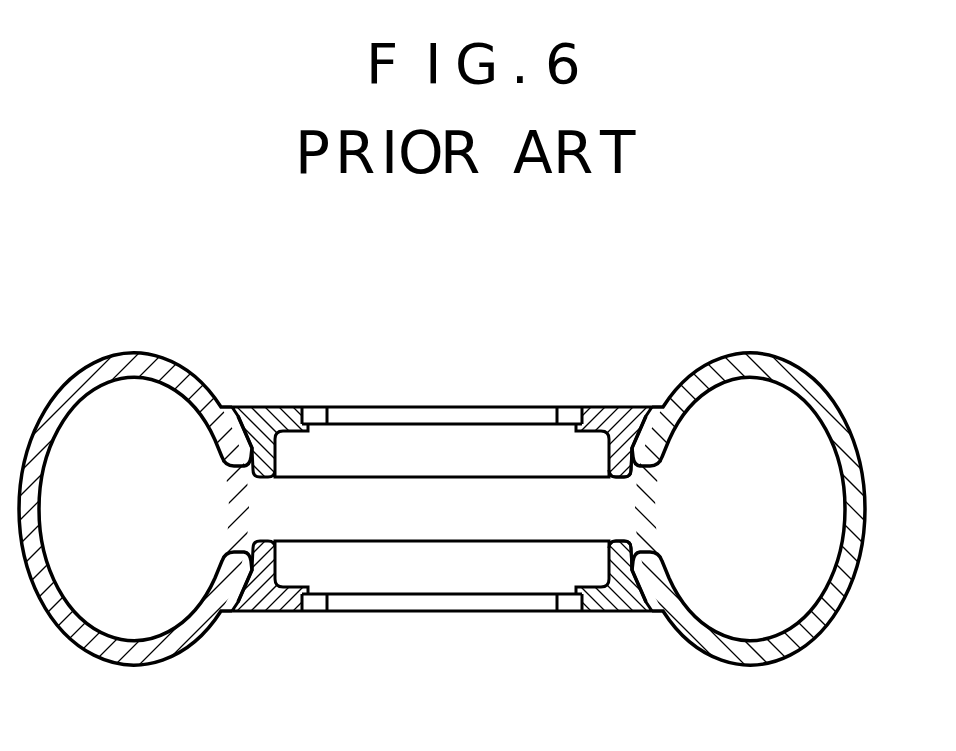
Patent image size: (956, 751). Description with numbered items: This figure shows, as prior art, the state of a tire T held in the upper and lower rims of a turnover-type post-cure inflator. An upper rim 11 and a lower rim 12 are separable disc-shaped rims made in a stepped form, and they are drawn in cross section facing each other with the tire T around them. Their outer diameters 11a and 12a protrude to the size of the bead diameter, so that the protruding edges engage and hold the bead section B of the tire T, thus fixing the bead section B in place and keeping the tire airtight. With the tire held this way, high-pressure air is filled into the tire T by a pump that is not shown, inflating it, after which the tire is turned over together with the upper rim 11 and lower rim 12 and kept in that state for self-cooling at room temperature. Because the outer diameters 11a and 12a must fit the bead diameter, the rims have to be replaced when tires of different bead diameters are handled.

The upper rim 11 is at (531, 407).
The outer diameter of upper rim 11a is at (632, 470).
The lower rim 12 is at (518, 613).
The outer diameter of lower rim 12a is at (620, 543).
The tire T is at (821, 384).
The bead section B is at (637, 560).